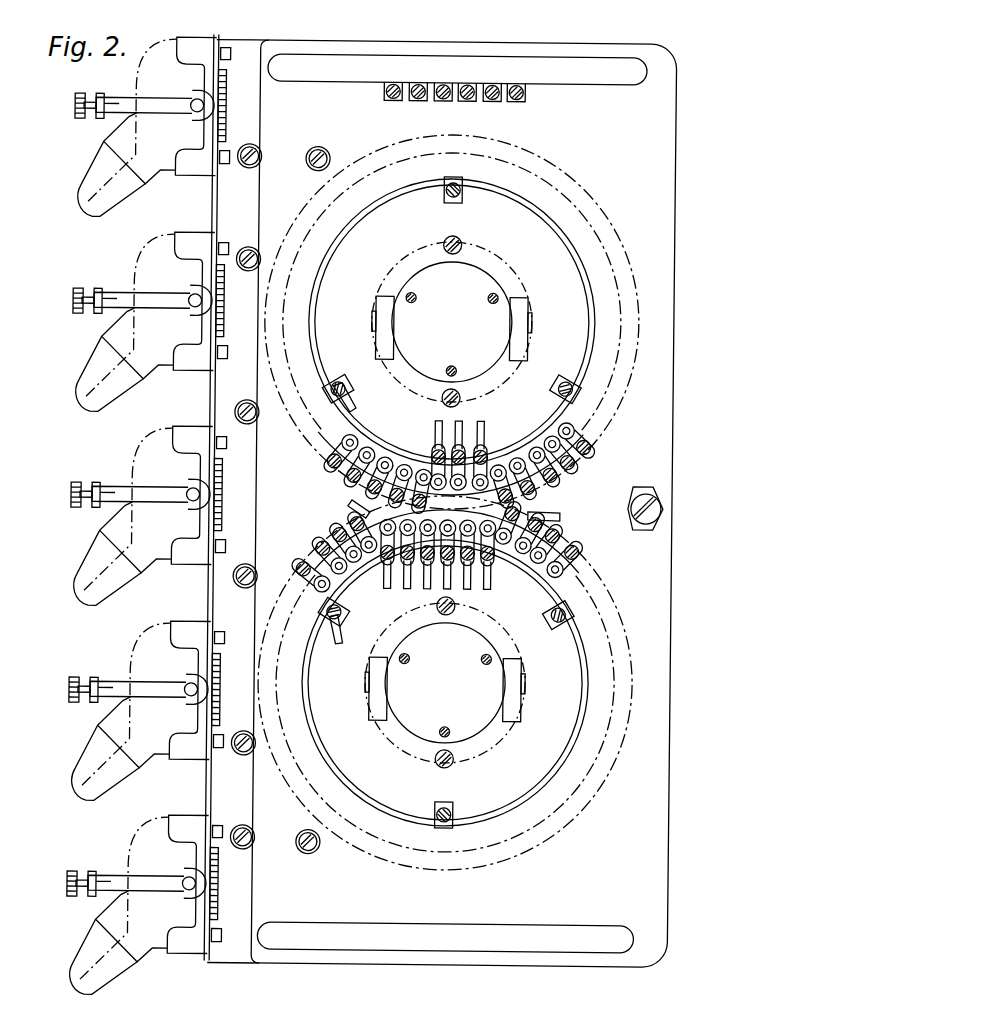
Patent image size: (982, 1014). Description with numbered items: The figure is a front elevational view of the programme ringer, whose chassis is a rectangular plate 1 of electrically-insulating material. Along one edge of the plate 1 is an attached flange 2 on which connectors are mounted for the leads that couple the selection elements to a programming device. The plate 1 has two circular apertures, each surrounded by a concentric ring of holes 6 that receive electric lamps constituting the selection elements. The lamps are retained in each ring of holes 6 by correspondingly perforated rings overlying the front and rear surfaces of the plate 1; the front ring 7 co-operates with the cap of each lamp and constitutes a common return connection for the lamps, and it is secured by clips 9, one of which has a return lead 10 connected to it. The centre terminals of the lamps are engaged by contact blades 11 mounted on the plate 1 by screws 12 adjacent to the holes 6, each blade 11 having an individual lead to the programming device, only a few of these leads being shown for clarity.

The rectangular plate 1 is at (640, 955).
The flange 2 is at (209, 960).
The ring of holes 6 is at (383, 445).
The perforated ring 7 is at (553, 429).
The clips 9 is at (337, 381).
The return lead 10 is at (355, 408).
The contact blades 11 is at (424, 470).
The screws 12 is at (436, 452).